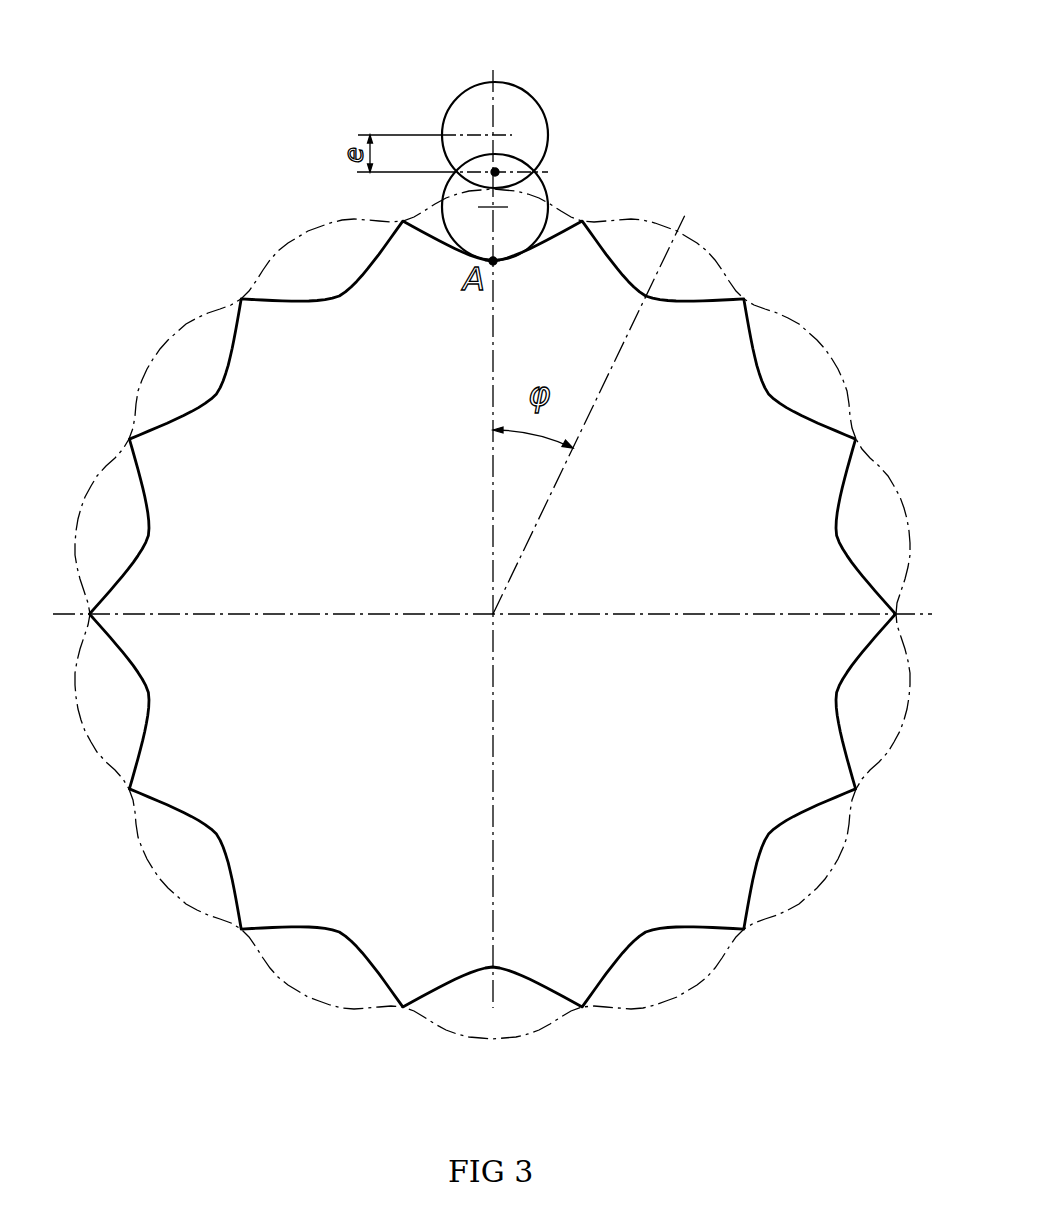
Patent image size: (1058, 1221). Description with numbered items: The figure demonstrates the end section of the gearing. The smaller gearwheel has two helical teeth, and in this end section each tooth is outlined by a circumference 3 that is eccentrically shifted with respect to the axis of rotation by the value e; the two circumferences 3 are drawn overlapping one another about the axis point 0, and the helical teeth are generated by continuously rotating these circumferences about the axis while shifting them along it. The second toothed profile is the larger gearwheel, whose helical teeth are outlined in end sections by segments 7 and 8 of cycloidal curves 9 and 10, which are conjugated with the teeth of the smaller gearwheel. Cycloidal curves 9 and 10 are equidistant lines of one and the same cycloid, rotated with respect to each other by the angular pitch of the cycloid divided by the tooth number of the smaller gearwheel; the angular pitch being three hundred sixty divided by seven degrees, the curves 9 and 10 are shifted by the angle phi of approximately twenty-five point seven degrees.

The circumference 3 is at (458, 98).
The roller centre O 0 is at (495, 172).
The segment of cycloidal curve 7 is at (837, 520).
The segment of cycloidal curve 8 is at (778, 402).
The cycloidal curve 9 is at (823, 347).
The cycloidal curve 10 is at (880, 467).